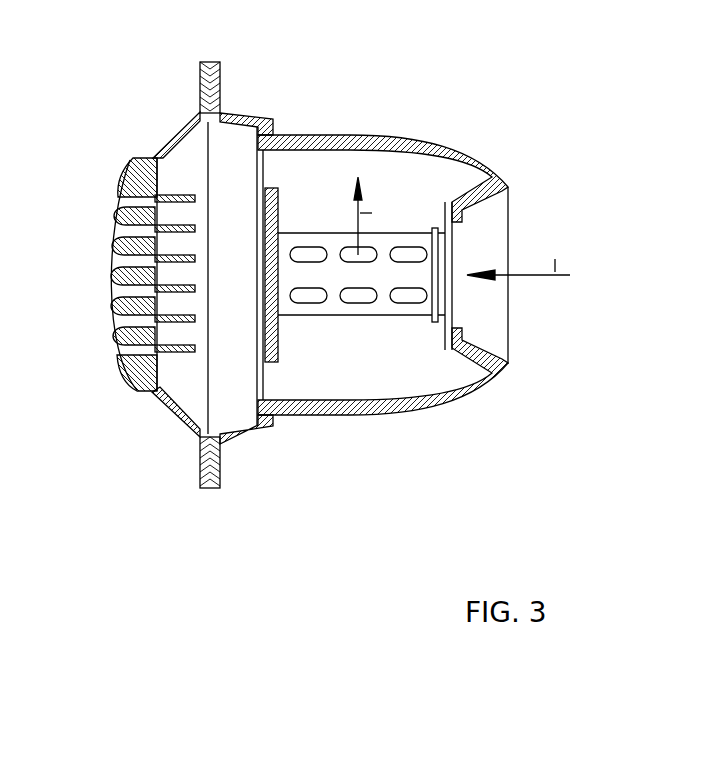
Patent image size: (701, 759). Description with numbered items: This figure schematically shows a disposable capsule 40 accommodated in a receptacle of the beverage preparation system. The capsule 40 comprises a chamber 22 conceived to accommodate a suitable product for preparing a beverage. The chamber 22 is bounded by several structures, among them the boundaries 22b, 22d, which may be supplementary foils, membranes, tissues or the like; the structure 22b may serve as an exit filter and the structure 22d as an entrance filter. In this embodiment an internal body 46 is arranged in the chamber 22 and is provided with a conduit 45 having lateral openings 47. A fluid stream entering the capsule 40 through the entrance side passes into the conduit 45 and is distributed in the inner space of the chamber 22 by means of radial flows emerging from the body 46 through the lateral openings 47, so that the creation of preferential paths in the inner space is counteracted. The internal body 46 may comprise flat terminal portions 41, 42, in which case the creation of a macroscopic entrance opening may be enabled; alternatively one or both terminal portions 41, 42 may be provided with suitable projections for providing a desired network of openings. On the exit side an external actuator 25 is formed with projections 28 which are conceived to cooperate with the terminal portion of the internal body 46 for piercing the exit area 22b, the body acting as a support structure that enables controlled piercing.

The disposable capsule 40 is at (458, 107).
The chamber 22 is at (419, 353).
The exit filter 22b is at (253, 160).
The entrance filter 22d is at (453, 305).
The external actuator 25 is at (113, 322).
The projections 28 is at (192, 201).
The flat terminal portion 41 is at (277, 188).
The flat terminal portion 42 is at (433, 227).
The conduit 45 is at (385, 305).
The internal body 46 is at (310, 315).
The lateral openings 47 is at (309, 253).